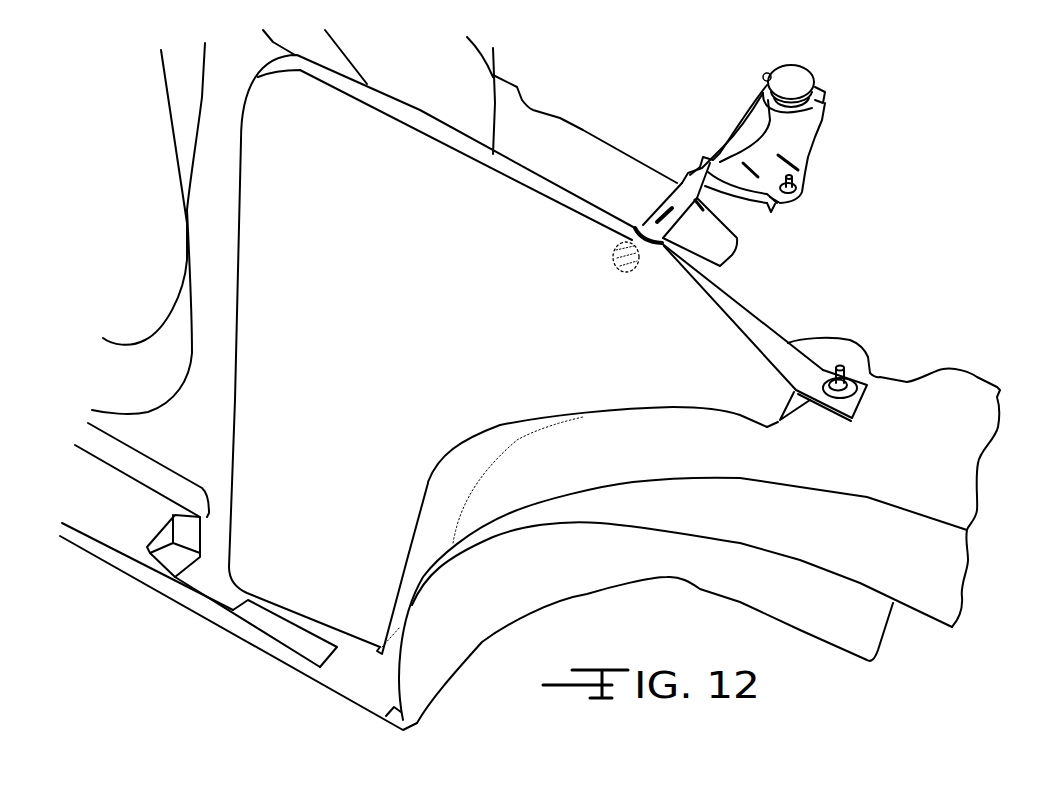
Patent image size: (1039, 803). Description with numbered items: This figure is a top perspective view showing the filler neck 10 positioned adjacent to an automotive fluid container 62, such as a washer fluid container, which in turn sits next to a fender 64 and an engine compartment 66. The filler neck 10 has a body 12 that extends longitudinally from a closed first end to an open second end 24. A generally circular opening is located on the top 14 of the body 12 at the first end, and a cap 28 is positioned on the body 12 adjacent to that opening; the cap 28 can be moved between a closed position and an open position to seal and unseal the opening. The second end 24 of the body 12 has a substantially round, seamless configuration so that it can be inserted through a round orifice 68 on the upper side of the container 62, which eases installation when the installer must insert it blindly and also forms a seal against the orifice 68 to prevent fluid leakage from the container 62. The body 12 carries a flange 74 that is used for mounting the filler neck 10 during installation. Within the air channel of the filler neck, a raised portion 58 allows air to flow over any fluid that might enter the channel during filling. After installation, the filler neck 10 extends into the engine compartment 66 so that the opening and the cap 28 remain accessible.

The filler neck 10 is at (848, 101).
The body 12 is at (823, 115).
The top 14 is at (737, 140).
The second end 24 is at (653, 247).
The cap 28 is at (800, 75).
The raised portion 58 is at (767, 73).
The automotive fluid container 62 is at (707, 342).
The fender 64 is at (913, 403).
The engine compartment 66 is at (580, 130).
The round orifice 68 is at (610, 251).
The flange 74 is at (802, 150).